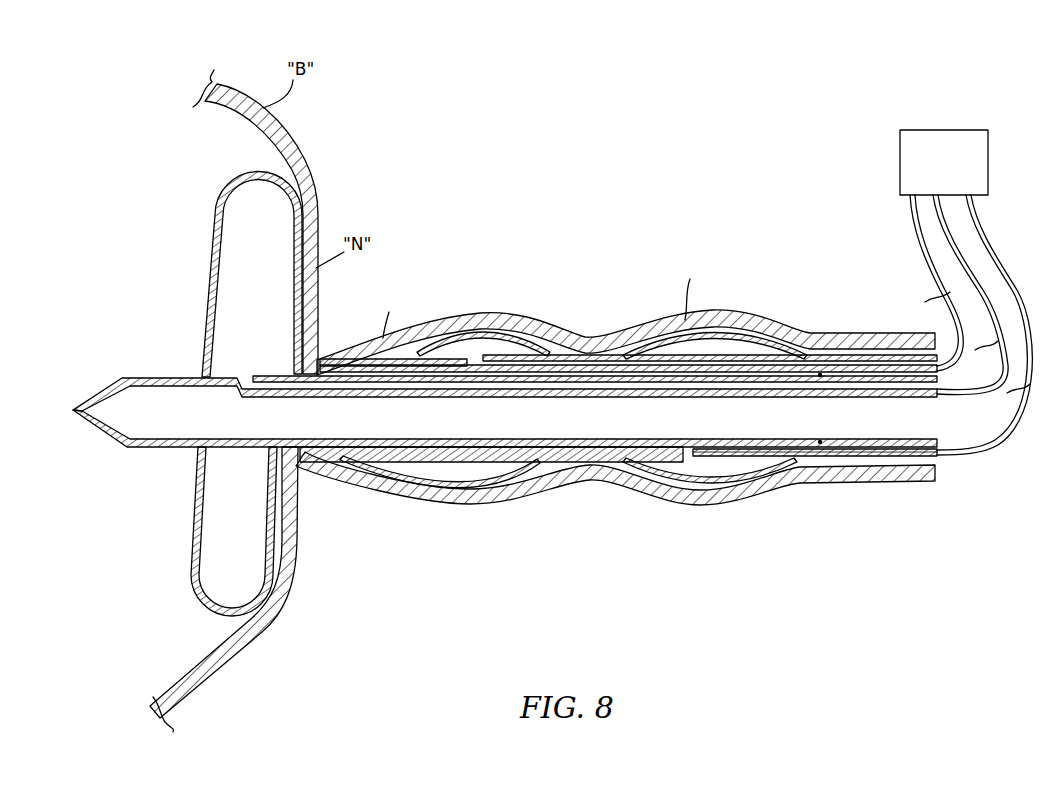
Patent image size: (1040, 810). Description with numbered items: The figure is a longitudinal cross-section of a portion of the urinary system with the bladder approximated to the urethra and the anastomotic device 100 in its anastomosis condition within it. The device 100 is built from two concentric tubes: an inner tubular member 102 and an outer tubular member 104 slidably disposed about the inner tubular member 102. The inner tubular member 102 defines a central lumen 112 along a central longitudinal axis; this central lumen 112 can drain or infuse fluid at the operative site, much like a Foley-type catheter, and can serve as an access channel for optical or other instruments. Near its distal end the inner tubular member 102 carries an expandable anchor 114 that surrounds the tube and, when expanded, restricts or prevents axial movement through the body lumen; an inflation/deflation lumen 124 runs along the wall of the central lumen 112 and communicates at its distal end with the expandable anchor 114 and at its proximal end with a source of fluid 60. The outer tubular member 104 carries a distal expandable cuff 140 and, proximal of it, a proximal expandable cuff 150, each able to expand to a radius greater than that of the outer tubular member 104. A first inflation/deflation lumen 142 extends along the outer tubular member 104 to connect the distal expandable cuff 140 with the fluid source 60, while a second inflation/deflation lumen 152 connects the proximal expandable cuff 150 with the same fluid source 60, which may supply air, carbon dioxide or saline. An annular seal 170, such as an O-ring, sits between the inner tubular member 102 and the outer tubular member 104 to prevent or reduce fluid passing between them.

The source of fluid 60 is at (943, 138).
The anastomotic device 100 is at (592, 226).
The inner tubular member 102 is at (165, 360).
The outer tubular member 104 is at (583, 345).
The central lumen 112 is at (893, 448).
The expandable anchor 114 is at (213, 237).
The inflation/deflation lumen 124 is at (902, 383).
The distal expandable cuff 140 is at (523, 340).
The first inflation/deflation lumen 142 is at (878, 362).
The proximal expandable cuff 150 is at (745, 322).
The second inflation/deflation lumen 152 is at (760, 497).
The annular seal 170 is at (820, 370).